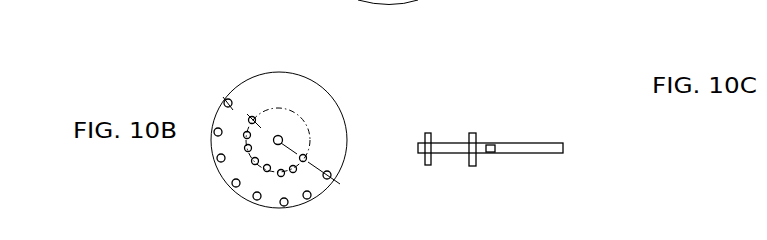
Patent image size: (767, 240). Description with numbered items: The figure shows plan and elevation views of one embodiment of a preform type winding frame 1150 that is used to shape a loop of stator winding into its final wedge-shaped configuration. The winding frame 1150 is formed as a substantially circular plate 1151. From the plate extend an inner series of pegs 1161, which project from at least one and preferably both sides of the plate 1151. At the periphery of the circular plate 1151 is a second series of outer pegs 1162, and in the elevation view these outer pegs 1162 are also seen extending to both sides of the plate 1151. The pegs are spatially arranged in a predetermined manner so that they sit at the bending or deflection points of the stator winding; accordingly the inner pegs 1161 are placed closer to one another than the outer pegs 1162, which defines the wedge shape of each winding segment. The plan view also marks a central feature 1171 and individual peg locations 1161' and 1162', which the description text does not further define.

In FIG. 10B, the preform type winding frame 1150 is at (318, 72).
In FIG. 10C, the preform type winding frame 1150 is at (507, 78).
In FIG. 10C, the circular plate 1151 is at (567, 155).
In FIG. 10B, the inner pegs 1161 is at (326, 135).
In FIG. 10C, the inner pegs 1161 is at (523, 133).
In FIG. 10B, the outer pegs 1162 is at (324, 175).
In FIG. 10C, the outer pegs 1162 is at (449, 122).
In FIG. 10B, the hub 1171 is at (292, 159).
In FIG. 10B, the inner pin hole 1161' is at (292, 68).
In FIG. 10B, the outer pin hole 1162' is at (230, 76).